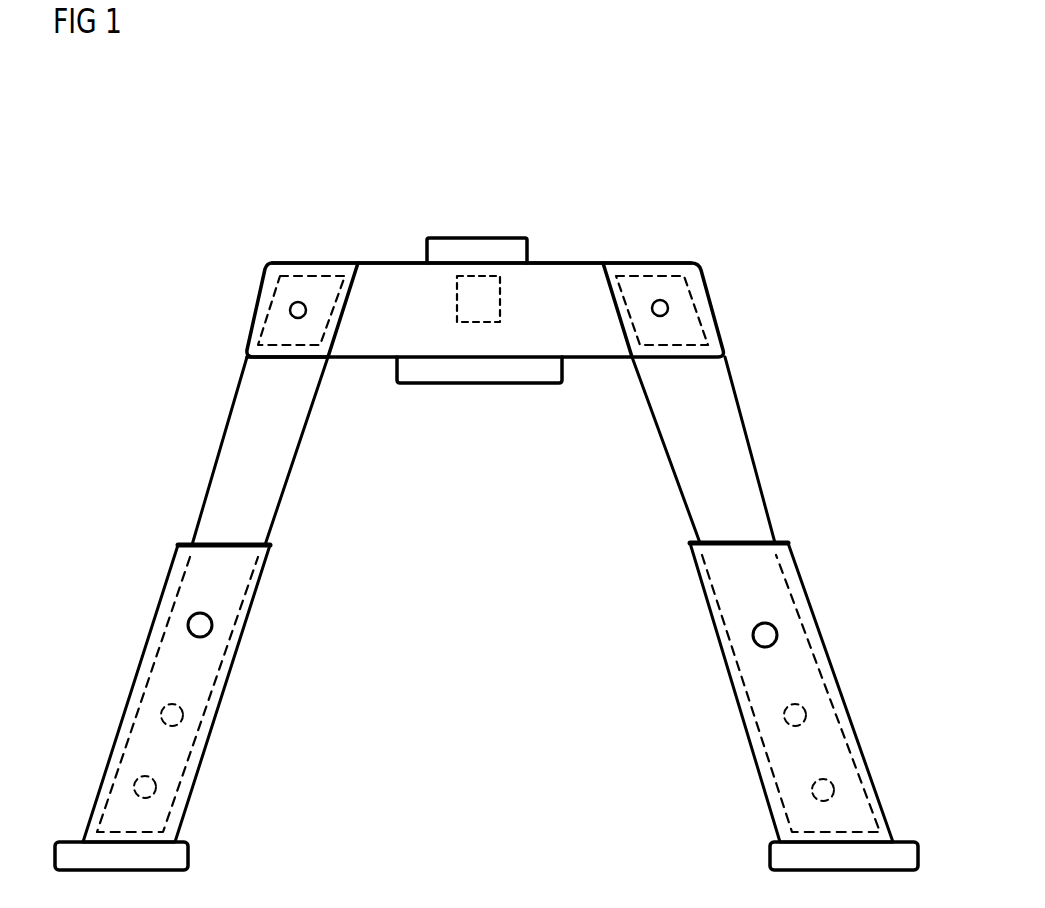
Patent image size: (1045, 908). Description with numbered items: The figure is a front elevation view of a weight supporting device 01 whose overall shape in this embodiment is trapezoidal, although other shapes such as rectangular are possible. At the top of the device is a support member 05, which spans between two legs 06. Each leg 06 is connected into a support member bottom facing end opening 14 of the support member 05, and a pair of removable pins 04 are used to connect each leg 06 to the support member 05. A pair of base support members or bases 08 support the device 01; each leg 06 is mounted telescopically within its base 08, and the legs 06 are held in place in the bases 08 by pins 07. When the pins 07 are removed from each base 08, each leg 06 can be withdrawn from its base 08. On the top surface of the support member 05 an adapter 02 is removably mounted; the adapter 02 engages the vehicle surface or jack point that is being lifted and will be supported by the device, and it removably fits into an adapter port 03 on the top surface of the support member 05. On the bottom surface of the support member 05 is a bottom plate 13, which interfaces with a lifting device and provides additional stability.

The weight supporting device 01 is at (377, 248).
The adapter 02 is at (485, 238).
The adapter port 03 is at (505, 293).
The removable pin 04 is at (290, 310).
The support member 05 is at (402, 262).
The leg 06 is at (302, 447).
The pin 07 is at (212, 623).
The base support member 08 is at (213, 738).
The bottom plate 13 is at (515, 383).
The support member bottom facing end opening 14 is at (265, 362).